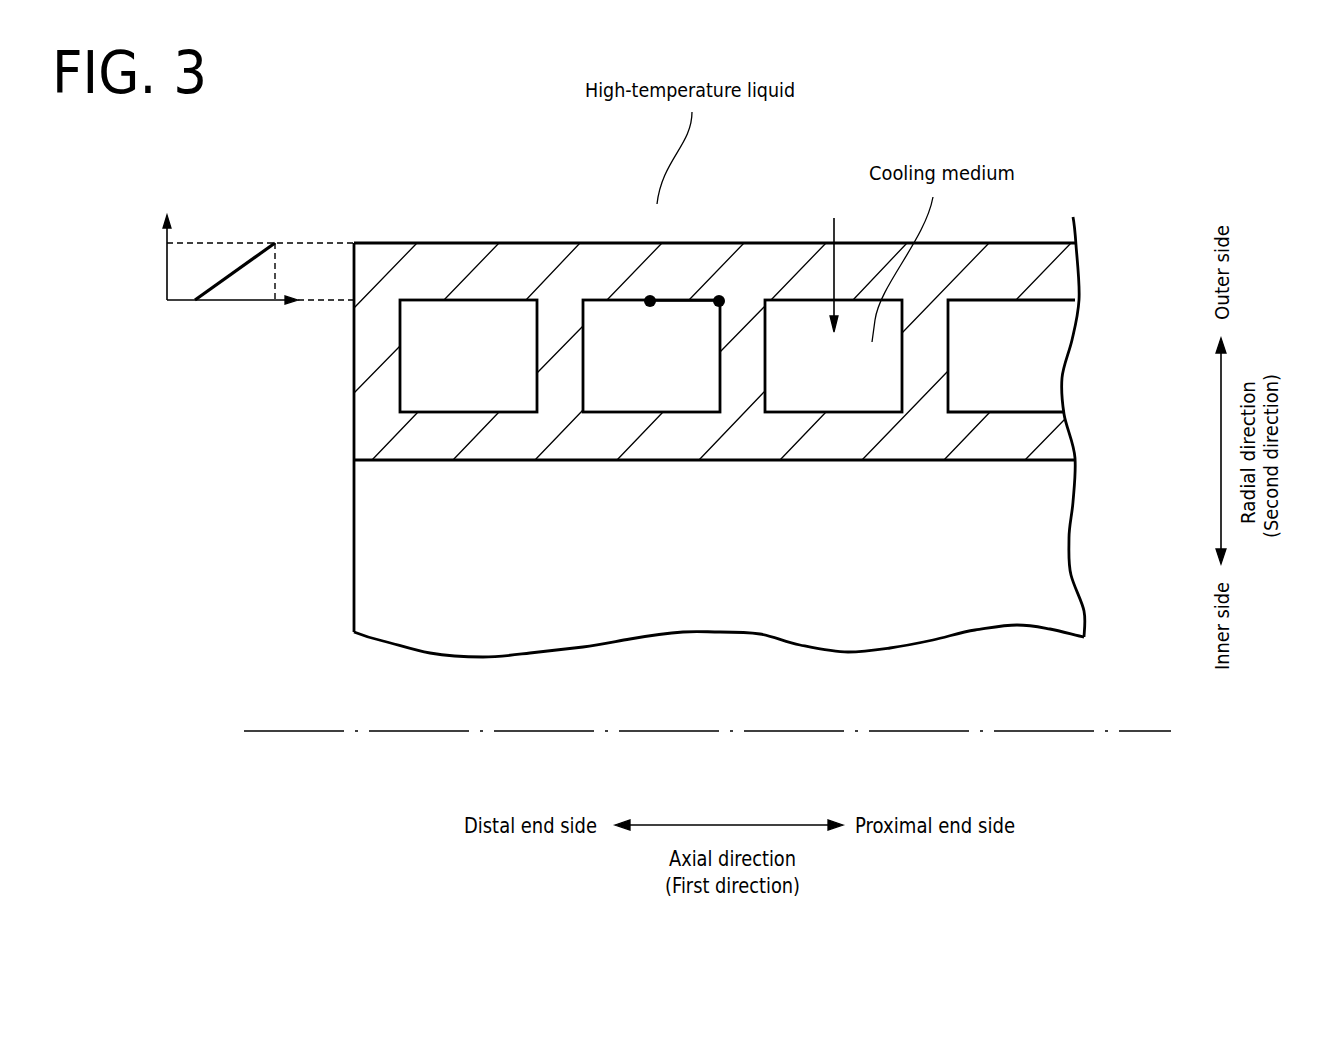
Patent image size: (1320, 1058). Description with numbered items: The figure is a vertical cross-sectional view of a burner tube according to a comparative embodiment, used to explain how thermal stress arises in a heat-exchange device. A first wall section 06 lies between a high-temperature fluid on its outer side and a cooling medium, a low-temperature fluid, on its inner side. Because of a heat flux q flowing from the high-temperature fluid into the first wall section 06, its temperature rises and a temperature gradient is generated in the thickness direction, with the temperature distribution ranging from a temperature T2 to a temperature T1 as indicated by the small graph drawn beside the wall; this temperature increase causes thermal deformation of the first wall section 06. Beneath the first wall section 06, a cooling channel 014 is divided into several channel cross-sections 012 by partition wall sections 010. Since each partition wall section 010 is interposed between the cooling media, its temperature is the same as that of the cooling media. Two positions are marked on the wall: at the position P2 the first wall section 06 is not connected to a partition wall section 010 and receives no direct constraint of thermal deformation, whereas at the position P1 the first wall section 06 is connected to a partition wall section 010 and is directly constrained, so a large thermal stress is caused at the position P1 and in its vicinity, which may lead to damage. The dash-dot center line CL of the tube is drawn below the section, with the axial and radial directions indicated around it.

The first wall section 06 is at (473, 260).
The partition wall section 010 is at (385, 375).
The channel cross-section 012 is at (468, 375).
The cooling channel 014 is at (799, 318).
The position P1 is at (719, 302).
The position P2 is at (650, 300).
The heat flux q is at (834, 230).
The temperature T1 is at (258, 283).
The temperature T2 is at (198, 335).
The center line CL is at (730, 730).